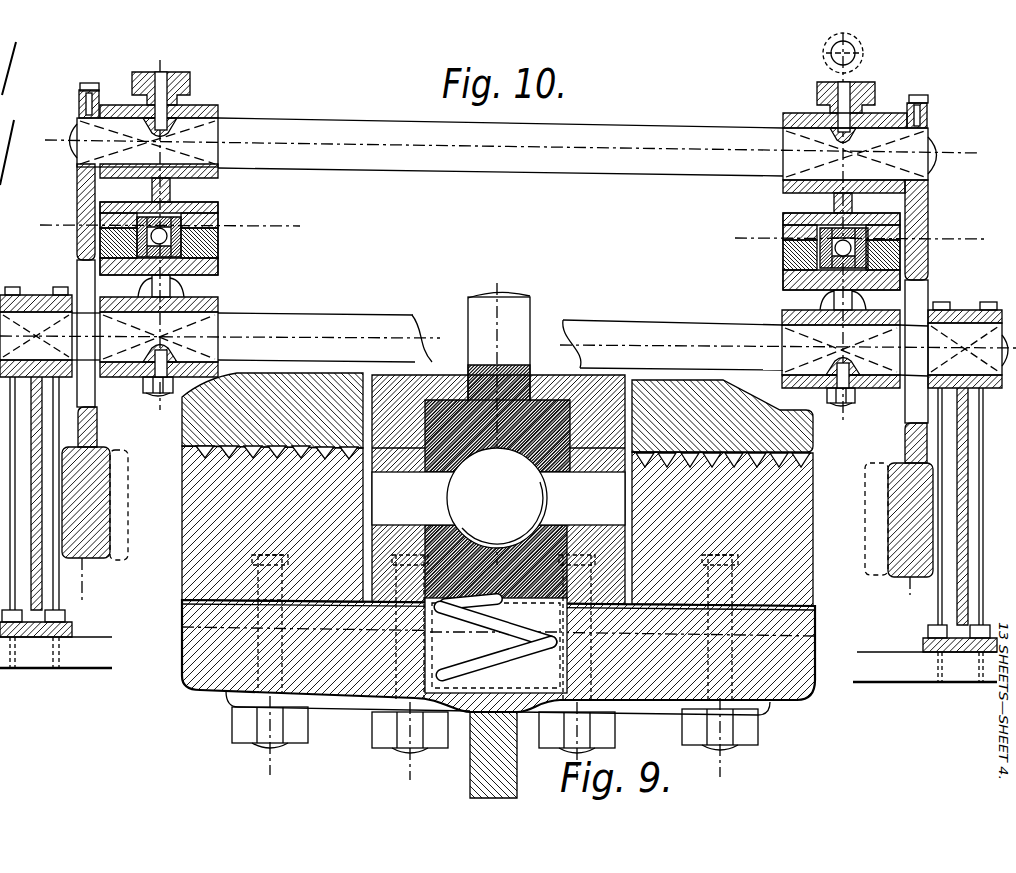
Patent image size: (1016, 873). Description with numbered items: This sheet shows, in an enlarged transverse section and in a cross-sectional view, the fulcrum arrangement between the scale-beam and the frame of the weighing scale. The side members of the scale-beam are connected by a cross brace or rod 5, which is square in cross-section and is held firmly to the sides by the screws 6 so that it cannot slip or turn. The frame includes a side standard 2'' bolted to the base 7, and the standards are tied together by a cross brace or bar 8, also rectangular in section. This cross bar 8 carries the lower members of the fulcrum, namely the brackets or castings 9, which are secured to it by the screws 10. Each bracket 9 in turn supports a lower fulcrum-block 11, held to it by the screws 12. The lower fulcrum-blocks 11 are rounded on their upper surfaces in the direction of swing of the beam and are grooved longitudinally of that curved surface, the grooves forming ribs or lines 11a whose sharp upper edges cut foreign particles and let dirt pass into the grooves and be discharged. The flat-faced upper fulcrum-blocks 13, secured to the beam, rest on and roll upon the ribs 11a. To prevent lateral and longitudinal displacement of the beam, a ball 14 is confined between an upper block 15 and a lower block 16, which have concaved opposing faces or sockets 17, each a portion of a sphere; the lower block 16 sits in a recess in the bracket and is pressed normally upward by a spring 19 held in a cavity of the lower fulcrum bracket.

In FIG. 10, the cross brace or rod 5 is at (327, 124).
In FIG. 10, the screws 6 is at (172, 101).
In FIG. 10, the base 7 is at (100, 642).
In FIG. 10, the cross brace or bar 8 is at (327, 318).
In FIG. 10, the brackets or castings 9 is at (219, 299).
In FIG. 10, the screws 10 is at (150, 389).
In FIG. 10, the lower fulcrum-blocks 11 is at (219, 252).
In FIG. 9, the lower fulcrum-blocks 11 is at (192, 507).
In FIG. 9, the ribs or lines 11a is at (822, 490).
In FIG. 9, the screws 12 is at (243, 724).
In FIG. 10, the fulcrum blocks or members 13 is at (220, 216).
In FIG. 9, the fulcrum blocks or members 13 is at (197, 419).
In FIG. 9, the ball 14 is at (497, 498).
In FIG. 9, the upper block 15 is at (450, 398).
In FIG. 9, the lower block 16 is at (553, 543).
In FIG. 9, the concaved opposing faces or sockets 17 is at (450, 474).
In FIG. 9, the spring 19 is at (510, 655).
In FIG. 10, the side standard 2'' is at (927, 492).